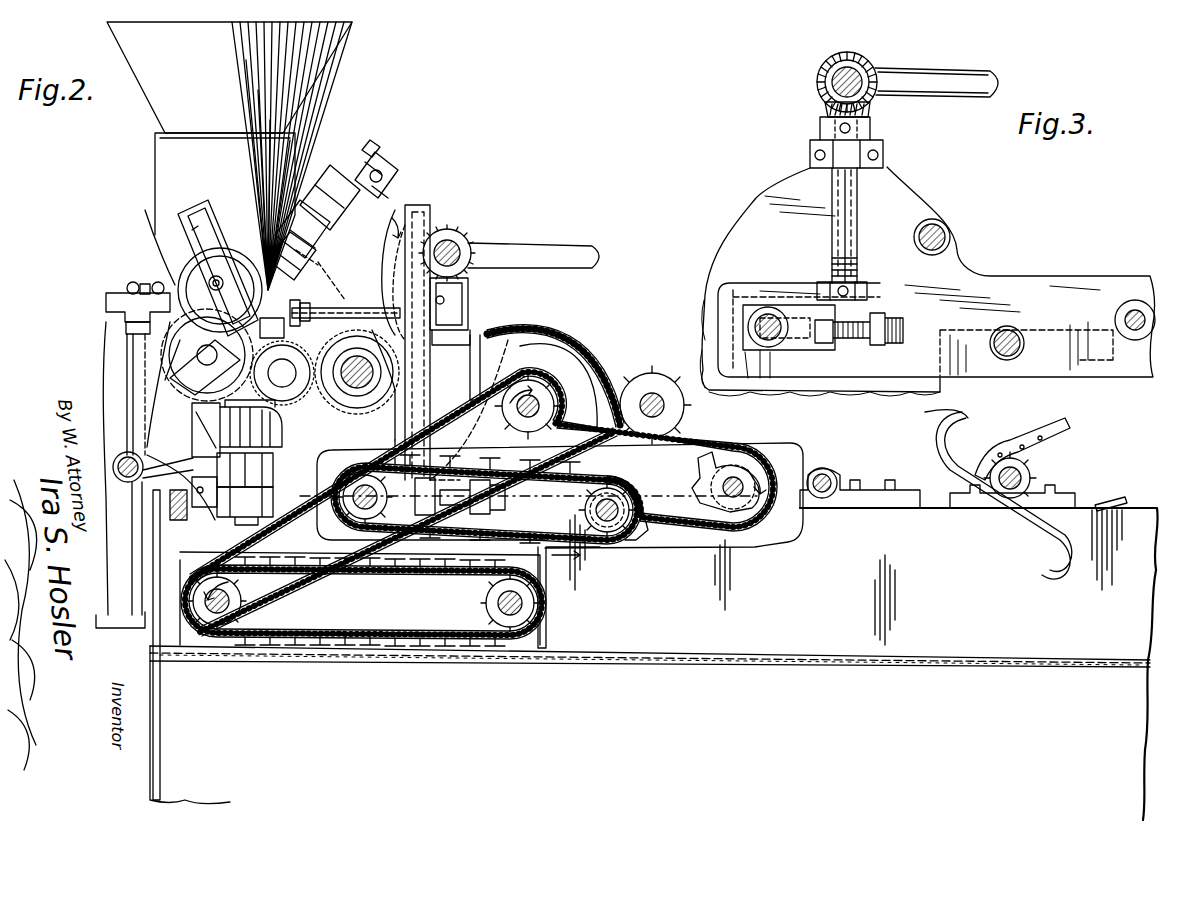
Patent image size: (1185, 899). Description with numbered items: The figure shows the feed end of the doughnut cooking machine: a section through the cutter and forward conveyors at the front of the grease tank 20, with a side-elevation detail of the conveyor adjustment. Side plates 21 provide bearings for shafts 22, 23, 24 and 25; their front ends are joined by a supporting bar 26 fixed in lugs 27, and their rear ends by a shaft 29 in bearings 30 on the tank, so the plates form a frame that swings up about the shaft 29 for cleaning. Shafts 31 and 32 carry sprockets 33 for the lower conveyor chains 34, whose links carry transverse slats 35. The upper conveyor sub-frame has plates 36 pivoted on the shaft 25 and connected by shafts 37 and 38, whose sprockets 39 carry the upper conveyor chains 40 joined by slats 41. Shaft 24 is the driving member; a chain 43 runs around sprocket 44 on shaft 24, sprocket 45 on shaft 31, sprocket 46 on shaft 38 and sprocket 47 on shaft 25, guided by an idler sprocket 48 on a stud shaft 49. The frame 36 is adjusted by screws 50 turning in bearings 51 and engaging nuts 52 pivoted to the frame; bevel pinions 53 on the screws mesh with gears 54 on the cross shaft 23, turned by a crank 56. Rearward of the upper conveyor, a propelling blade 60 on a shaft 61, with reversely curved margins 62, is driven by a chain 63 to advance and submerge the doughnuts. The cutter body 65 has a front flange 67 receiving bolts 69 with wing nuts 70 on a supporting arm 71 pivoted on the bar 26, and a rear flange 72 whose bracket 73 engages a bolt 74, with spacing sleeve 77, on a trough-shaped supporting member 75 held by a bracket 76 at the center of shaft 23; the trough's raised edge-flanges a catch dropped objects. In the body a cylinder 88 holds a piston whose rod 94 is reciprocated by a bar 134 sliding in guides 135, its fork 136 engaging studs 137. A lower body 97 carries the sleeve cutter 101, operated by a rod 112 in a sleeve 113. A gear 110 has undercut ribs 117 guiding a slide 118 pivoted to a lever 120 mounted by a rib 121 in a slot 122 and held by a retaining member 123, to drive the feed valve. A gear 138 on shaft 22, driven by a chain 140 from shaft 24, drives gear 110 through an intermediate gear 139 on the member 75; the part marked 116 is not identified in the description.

In FIG. 2, the grease tank 20 is at (864, 664).
In FIG. 2, the side plates 21 is at (430, 620).
In FIG. 3, the side plates 21 is at (1040, 278).
In FIG. 2, the shaft 22 is at (357, 360).
In FIG. 2, the cross shaft 23 is at (456, 242).
In FIG. 3, the cross shaft 23 is at (865, 78).
In FIG. 2, the shaft 24 is at (528, 393).
In FIG. 3, the shaft 24 is at (942, 232).
In FIG. 2, the shaft 25 is at (740, 478).
In FIG. 3, the shaft 25 is at (1135, 308).
In FIG. 2, the supporting bar 26 is at (114, 463).
In FIG. 2, the lugs 27 is at (163, 456).
In FIG. 2, the shaft 29 is at (826, 475).
In FIG. 2, the bearings 30 is at (840, 480).
In FIG. 2, the shaft 31 is at (220, 614).
In FIG. 2, the shaft 32 is at (513, 618).
In FIG. 2, the sprockets 33 is at (275, 590).
In FIG. 2, the lower conveyor chains 34 is at (378, 650).
In FIG. 2, the transverse slats 35 is at (335, 644).
In FIG. 2, the plates 36 is at (700, 540).
In FIG. 3, the plates 36 is at (987, 366).
In FIG. 2, the shaft 37 is at (362, 512).
In FIG. 3, the shaft 37 is at (769, 312).
In FIG. 2, the shaft 38 is at (610, 522).
In FIG. 3, the shaft 38 is at (1015, 332).
In FIG. 2, the sprockets 39 is at (368, 535).
In FIG. 2, the upper conveyor chains 40 is at (546, 552).
In FIG. 2, the transverse slats 41 is at (648, 530).
In FIG. 2, the chain 43 is at (585, 385).
In FIG. 2, the sprocket 44 is at (600, 340).
In FIG. 2, the sprocket 45 is at (212, 600).
In FIG. 2, the sprocket 46 is at (607, 522).
In FIG. 2, the sprocket 47 is at (720, 458).
In FIG. 2, the idler sprocket 48 is at (656, 372).
In FIG. 2, the stud shaft 49 is at (665, 405).
In FIG. 2, the screws 50 is at (451, 407).
In FIG. 3, the screws 50 is at (860, 210).
In FIG. 3, the bearings 51 is at (810, 150).
In FIG. 3, the nuts 52 is at (860, 282).
In FIG. 2, the bevel pinions 53 is at (470, 272).
In FIG. 3, the bevel pinions 53 is at (820, 106).
In FIG. 2, the gears 54 is at (455, 232).
In FIG. 3, the gears 54 is at (828, 58).
In FIG. 2, the crank 56 is at (578, 250).
In FIG. 3, the crank 56 is at (985, 75).
In FIG. 2, the blade or plate 60 is at (1050, 530).
In FIG. 2, the shaft 61 is at (1025, 470).
In FIG. 2, the margins 62 is at (922, 450).
In FIG. 2, the chain 63 is at (1028, 440).
In FIG. 2, the body 65 is at (229, 156).
In FIG. 2, the front flange 67 is at (125, 296).
In FIG. 2, the bolts 69 is at (144, 283).
In FIG. 2, the wing nuts 70 is at (130, 284).
In FIG. 2, the supporting arm 71 is at (128, 350).
In FIG. 2, the rear flange 72 is at (300, 360).
In FIG. 2, the bracket 73 is at (330, 278).
In FIG. 2, the bolt 74 is at (285, 320).
In FIG. 2, the shaft-supporting frame member 75 is at (406, 225).
In FIG. 2, the bracket 76 is at (432, 212).
In FIG. 2, the spacing sleeve 77 is at (332, 306).
In FIG. 2, the cylinder 88 is at (312, 282).
In FIG. 2, the rod 94 is at (332, 185).
In FIG. 2, the lower body 97 is at (282, 446).
In FIG. 2, the sleeve cutter 101 is at (273, 466).
In FIG. 2, the gear 110 is at (165, 384).
In FIG. 2, the rod 112 is at (193, 472).
In FIG. 2, the sleeve 113 is at (190, 460).
In FIG. 2, the bracket 116 is at (228, 500).
In FIG. 2, the undercut ribs 117 is at (175, 360).
In FIG. 2, the slide 118 is at (200, 370).
In FIG. 2, the cross arm or lever 120 is at (210, 215).
In FIG. 2, the rib 121 is at (222, 276).
In FIG. 2, the slot 122 is at (195, 228).
In FIG. 2, the retaining member 123 is at (175, 285).
In FIG. 2, the bar 134 is at (325, 226).
In FIG. 2, the guides 135 is at (318, 242).
In FIG. 2, the fork 136 is at (384, 168).
In FIG. 2, the studs 137 is at (367, 146).
In FIG. 2, the gear 138 is at (380, 393).
In FIG. 2, the intermediate gear 139 is at (275, 425).
In FIG. 2, the chain 140 is at (512, 332).
In FIG. 2, the raised edge-flanges a is at (390, 222).